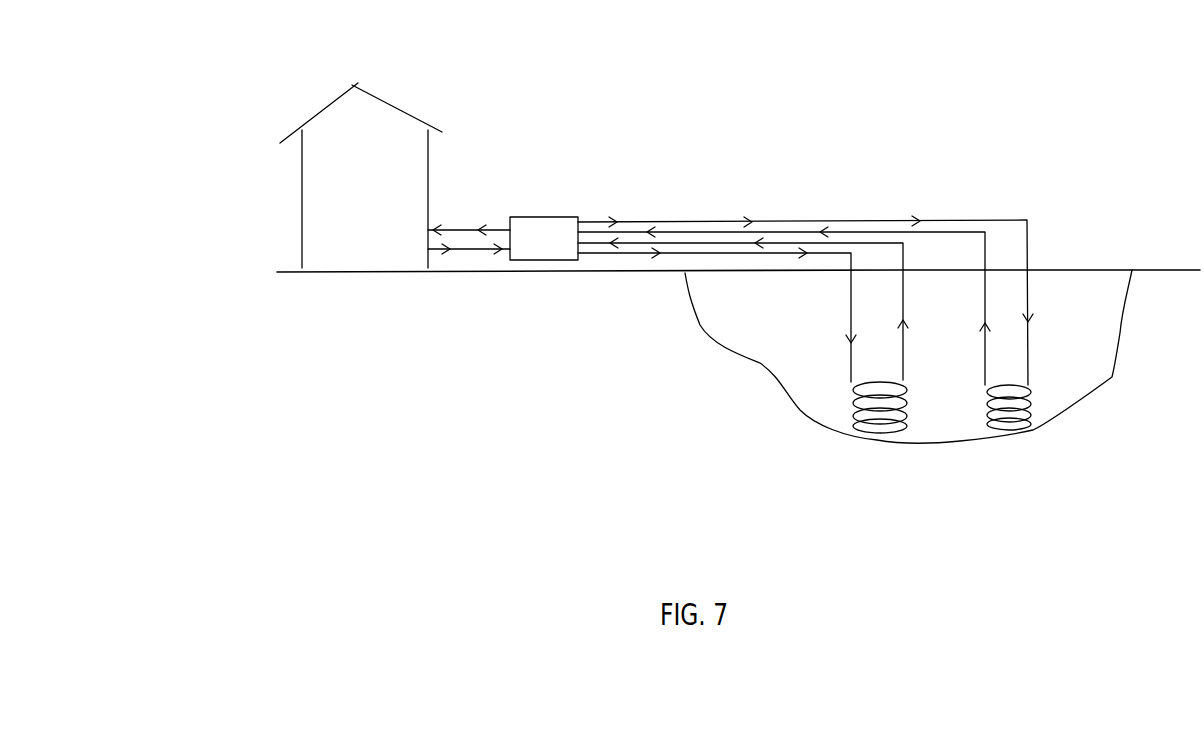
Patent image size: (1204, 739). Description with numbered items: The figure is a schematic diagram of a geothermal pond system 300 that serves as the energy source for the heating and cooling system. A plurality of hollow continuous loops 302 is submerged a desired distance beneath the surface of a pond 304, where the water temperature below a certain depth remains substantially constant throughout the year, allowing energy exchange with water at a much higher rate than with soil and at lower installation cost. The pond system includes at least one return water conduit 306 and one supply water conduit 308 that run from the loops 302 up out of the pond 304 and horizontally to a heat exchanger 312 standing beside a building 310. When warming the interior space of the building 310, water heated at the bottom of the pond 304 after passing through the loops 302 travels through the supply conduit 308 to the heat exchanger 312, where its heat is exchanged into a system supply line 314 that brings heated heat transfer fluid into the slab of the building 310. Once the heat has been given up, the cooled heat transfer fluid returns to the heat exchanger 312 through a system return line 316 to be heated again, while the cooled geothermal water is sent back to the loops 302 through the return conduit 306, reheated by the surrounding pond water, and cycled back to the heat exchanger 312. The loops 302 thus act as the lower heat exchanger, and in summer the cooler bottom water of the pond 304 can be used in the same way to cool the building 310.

The geothermal pond system 300 is at (1007, 57).
The hollow continuous loops 302 is at (878, 432).
The pond 304 is at (1093, 360).
The return water conduit 306 is at (850, 318).
The supply water conduit 308 is at (904, 293).
The building 310 is at (327, 112).
The heat exchanger 312 is at (540, 217).
The system supply line 314 is at (457, 230).
The system return line 316 is at (465, 252).